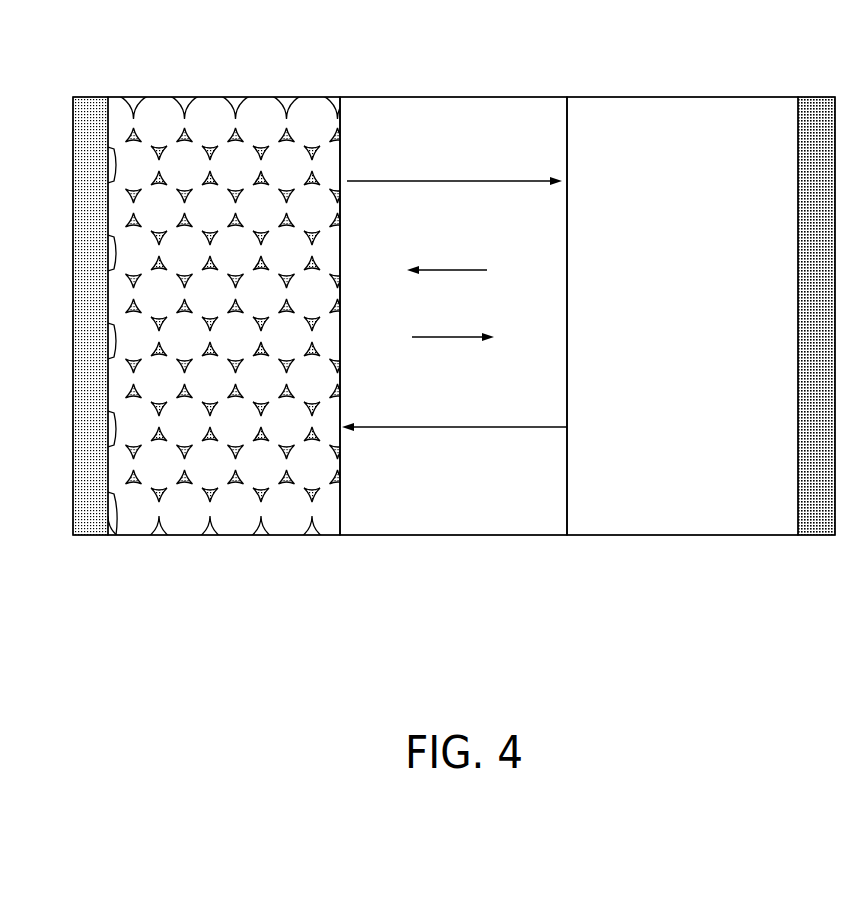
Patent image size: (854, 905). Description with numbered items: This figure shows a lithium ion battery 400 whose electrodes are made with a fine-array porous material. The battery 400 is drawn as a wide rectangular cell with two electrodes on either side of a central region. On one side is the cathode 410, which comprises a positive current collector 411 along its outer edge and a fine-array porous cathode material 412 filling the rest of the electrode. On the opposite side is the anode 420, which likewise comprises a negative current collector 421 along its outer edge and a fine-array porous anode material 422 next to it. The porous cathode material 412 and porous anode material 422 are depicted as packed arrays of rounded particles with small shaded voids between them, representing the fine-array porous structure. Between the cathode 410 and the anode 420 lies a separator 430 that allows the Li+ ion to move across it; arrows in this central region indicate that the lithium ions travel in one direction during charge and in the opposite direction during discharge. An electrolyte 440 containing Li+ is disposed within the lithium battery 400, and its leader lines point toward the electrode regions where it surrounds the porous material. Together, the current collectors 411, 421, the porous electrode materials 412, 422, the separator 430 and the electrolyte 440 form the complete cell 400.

The lithium ion battery 400 is at (460, 345).
The cathode 410 is at (236, 317).
The positive current collector 411 is at (89, 518).
The fine-array porous cathode material 412 is at (210, 532).
The anode 420 is at (695, 317).
The negative current collector 421 is at (819, 536).
The fine-array porous anode material 422 is at (695, 525).
The separator 430 is at (452, 86).
The electrolyte 440 is at (567, 534).